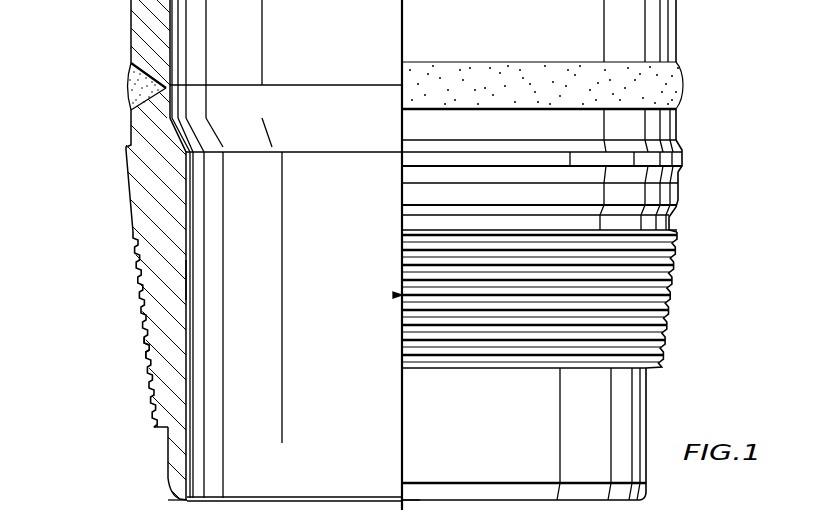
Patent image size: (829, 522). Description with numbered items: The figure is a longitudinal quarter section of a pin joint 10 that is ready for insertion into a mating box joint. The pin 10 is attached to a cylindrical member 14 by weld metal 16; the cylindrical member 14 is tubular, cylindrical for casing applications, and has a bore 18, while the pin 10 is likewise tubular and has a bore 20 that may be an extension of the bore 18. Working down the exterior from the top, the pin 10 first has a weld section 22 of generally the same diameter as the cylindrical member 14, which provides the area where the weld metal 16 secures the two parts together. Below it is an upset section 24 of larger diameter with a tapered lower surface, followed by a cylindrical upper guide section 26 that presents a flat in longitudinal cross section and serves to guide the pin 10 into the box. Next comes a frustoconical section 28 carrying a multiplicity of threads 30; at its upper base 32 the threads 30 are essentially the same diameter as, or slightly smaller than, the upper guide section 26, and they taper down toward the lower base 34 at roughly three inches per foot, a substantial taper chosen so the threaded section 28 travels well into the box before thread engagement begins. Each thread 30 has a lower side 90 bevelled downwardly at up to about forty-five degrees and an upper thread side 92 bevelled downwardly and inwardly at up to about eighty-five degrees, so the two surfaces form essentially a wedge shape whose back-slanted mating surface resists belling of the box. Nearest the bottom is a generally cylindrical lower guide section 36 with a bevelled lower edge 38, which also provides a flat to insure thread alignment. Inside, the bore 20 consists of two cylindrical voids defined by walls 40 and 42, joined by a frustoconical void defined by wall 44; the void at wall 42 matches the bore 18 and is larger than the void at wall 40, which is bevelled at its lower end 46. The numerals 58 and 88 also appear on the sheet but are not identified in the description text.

The pin joint 10 is at (80, 107).
The cylindrical member 14 is at (677, 23).
The weld metal 16 is at (683, 78).
The bore 18 is at (368, 46).
The bore 20 is at (348, 300).
The weld section 22 is at (678, 128).
The upset section 24 is at (682, 157).
The upper guide section 26 is at (678, 198).
The frustoconical section 28 is at (667, 320).
The threads 30 is at (141, 307).
The upper base 32 is at (131, 231).
The lower base 34 is at (162, 427).
The lower guide section 36 is at (168, 463).
The bevelled lower edge 38 is at (643, 492).
The wall 40 is at (186, 280).
The wall 42 is at (172, 105).
The wall 44 is at (186, 150).
The lower end 46 is at (189, 498).
The coupling member 58 is at (582, 511).
The lower end of box 88 is at (150, 511).
The lower side 90 is at (150, 357).
The upper thread side 92 is at (148, 347).